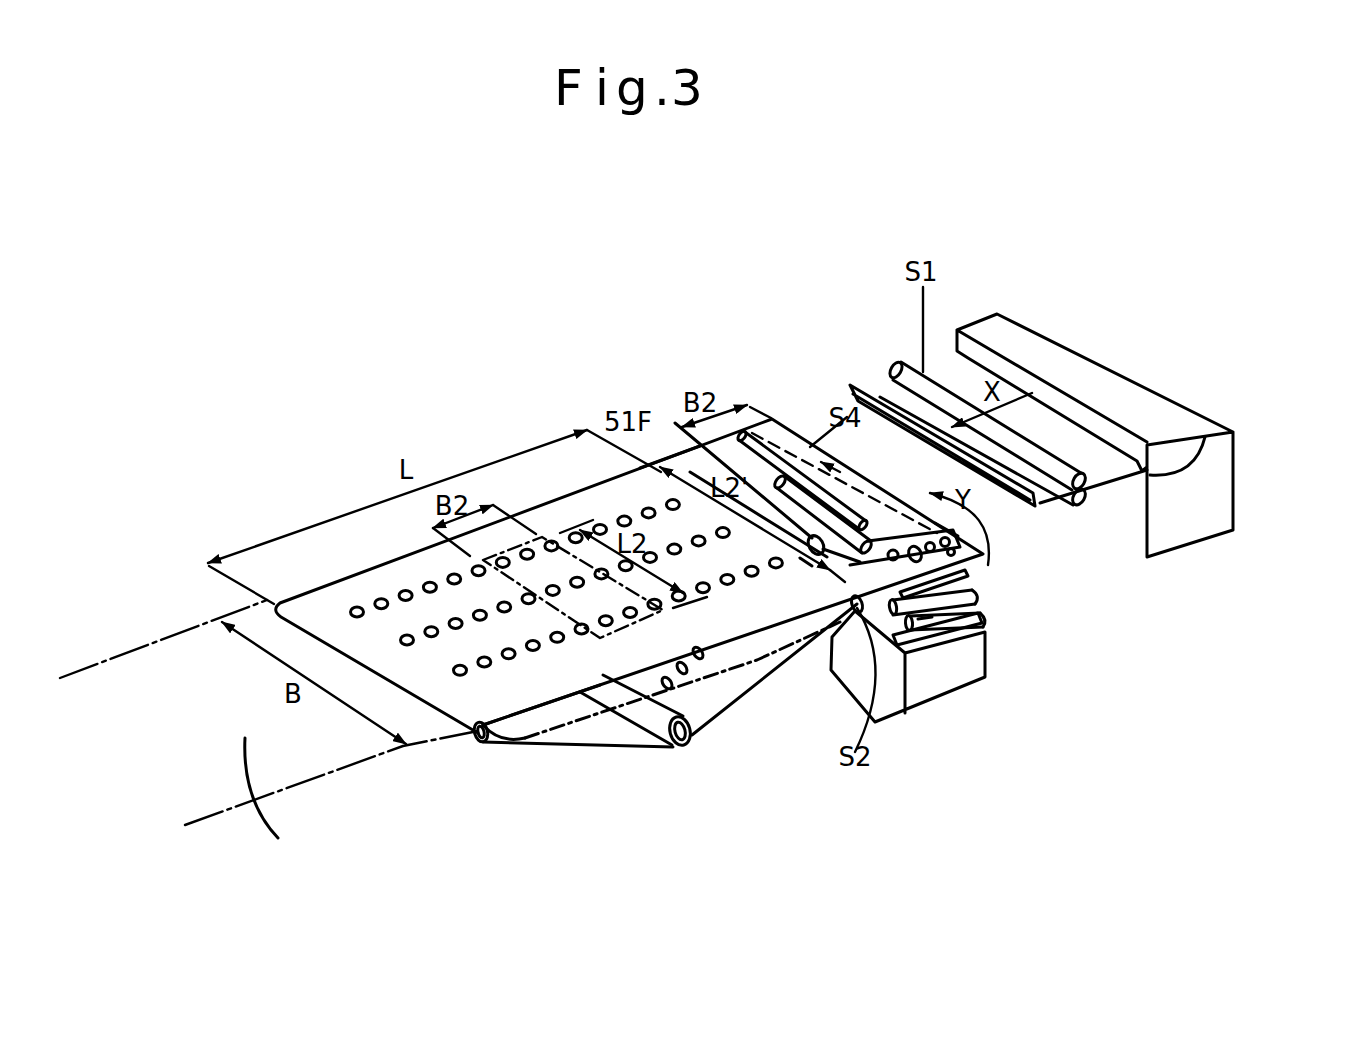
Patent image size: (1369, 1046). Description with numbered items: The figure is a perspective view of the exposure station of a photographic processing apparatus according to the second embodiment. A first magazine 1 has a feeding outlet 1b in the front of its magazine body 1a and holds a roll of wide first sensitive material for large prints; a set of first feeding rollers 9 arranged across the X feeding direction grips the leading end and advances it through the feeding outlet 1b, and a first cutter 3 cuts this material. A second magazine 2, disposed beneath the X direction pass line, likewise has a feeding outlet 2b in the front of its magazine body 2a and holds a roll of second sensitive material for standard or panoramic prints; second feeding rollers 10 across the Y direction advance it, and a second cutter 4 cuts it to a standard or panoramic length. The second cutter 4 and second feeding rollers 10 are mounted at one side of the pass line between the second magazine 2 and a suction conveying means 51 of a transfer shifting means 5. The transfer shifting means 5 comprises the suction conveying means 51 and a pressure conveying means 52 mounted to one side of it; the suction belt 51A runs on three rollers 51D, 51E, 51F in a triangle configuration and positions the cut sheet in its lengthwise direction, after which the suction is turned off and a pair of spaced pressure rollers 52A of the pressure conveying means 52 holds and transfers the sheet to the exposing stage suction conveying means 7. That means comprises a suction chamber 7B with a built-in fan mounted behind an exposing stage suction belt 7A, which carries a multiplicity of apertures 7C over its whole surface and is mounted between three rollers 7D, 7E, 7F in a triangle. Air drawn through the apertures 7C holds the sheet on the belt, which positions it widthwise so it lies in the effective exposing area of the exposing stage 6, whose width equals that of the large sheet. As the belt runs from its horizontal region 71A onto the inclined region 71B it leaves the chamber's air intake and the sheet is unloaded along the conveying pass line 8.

The first magazine 1 is at (1127, 435).
The magazine body 1a is at (1147, 398).
The feeding outlet 1b is at (1151, 435).
The second magazine 2 is at (959, 668).
The magazine body 2a is at (975, 680).
The feeding outlet 2b is at (978, 630).
The first cutter 3 is at (1037, 505).
The second cutter 4 is at (978, 592).
The transfer shifting means 5 is at (789, 382).
The exposing stage 6 is at (363, 577).
The exposing stage suction conveying means 7 is at (603, 758).
The exposing stage suction belt 7A is at (470, 712).
The suction chamber 7B is at (633, 750).
The apertures 7C is at (452, 582).
The roller 7D is at (689, 745).
The roller 7E is at (860, 612).
The roller 7F is at (479, 732).
The conveying pass line 8 is at (272, 805).
The first feeding rollers 9 is at (1083, 491).
The second feeding rollers 10 is at (923, 617).
The suction conveying means 51 is at (778, 503).
The suction belt 51A is at (940, 532).
The roller 51D is at (806, 560).
The roller 51E is at (968, 570).
The roller 51F is at (652, 437).
The pressure conveying means 52 is at (819, 407).
The pressure rollers 52A is at (793, 434).
The horizontal region 71A is at (452, 715).
The inclined region 71B is at (566, 750).